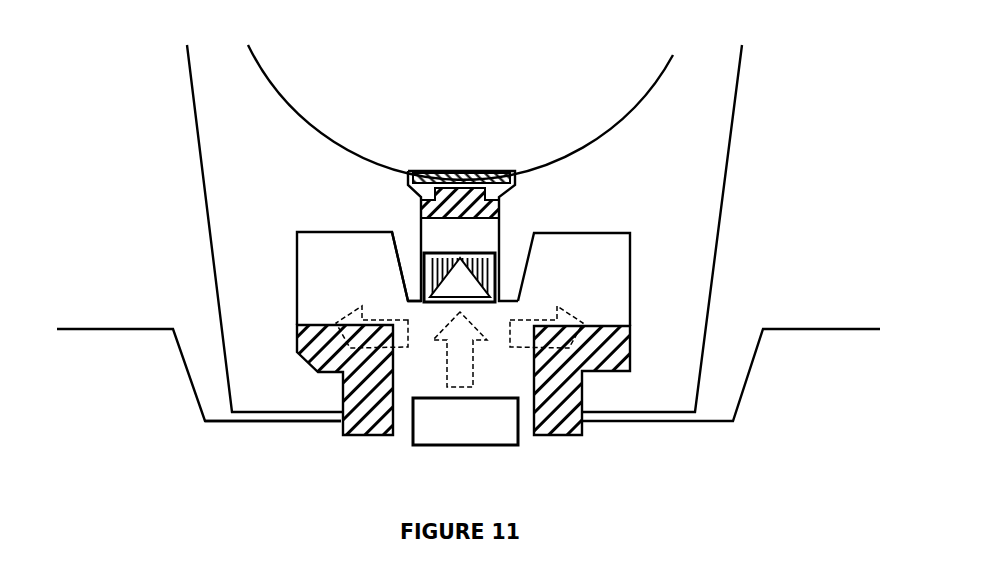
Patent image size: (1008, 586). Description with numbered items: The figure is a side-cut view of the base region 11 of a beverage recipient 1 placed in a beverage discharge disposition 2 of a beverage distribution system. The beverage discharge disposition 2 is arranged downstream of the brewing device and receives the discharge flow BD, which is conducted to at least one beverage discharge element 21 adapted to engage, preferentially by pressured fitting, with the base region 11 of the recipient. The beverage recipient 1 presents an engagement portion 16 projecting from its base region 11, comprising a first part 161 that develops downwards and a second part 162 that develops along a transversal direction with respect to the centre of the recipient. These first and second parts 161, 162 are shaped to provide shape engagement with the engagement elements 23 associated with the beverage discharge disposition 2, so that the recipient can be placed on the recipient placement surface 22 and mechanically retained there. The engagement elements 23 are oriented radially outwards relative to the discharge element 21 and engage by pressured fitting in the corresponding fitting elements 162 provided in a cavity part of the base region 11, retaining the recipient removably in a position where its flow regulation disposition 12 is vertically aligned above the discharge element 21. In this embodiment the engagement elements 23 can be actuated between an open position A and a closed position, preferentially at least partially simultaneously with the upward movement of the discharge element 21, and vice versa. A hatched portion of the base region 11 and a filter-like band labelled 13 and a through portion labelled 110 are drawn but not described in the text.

The open position A is at (460, 93).
The beverage recipient 1 is at (445, 228).
The beverage discharge disposition 2 is at (468, 364).
The base region 11 is at (426, 234).
The through hole 110 is at (487, 205).
The flow regulation disposition 12 is at (459, 267).
The filter 13 is at (461, 164).
The engagement portion 16 is at (280, 278).
The first part 161 is at (325, 266).
The second part 162 is at (349, 370).
The beverage discharge element 21 is at (450, 354).
The recipient placement surface 22 is at (251, 408).
The engagement elements 23 is at (570, 334).
The discharge flow BD is at (467, 410).